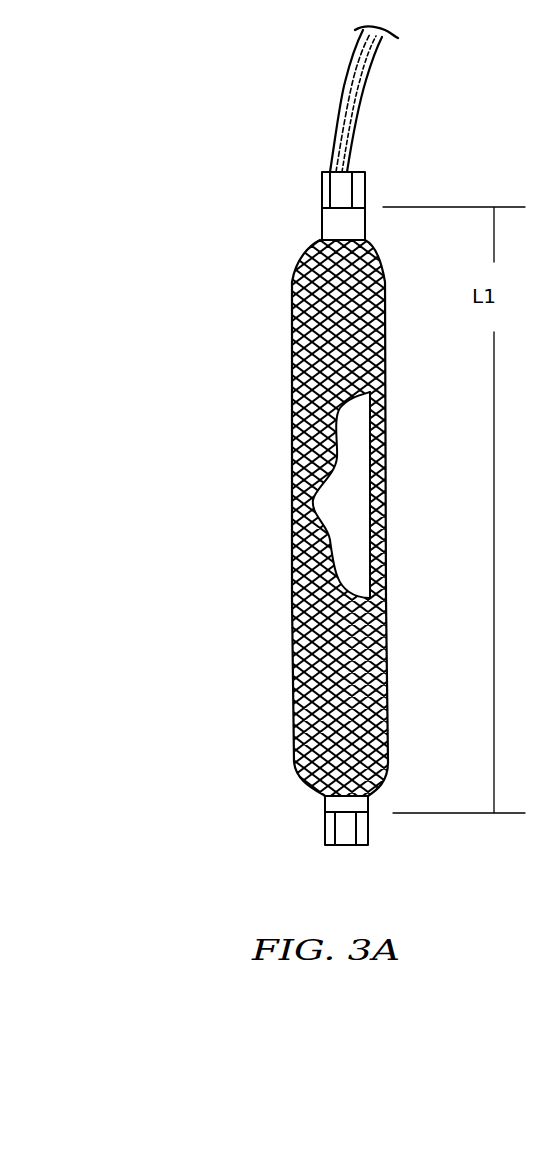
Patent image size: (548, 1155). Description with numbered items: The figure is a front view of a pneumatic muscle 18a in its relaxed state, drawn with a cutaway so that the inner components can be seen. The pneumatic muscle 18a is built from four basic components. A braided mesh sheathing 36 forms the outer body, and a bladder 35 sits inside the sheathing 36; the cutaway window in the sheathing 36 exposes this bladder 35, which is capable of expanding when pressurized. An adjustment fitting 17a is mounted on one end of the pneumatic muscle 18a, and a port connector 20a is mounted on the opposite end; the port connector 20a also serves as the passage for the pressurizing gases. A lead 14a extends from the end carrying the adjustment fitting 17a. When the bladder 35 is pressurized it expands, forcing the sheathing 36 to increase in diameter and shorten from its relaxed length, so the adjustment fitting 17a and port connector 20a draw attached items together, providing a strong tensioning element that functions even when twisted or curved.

The electrical lead wire 14a is at (342, 93).
The adjustment fitting 17a is at (324, 193).
The pneumatic muscle 18a is at (173, 257).
The port connector 20a is at (342, 821).
The bladder 35 is at (350, 498).
The braided mesh sheathing 36 is at (372, 418).